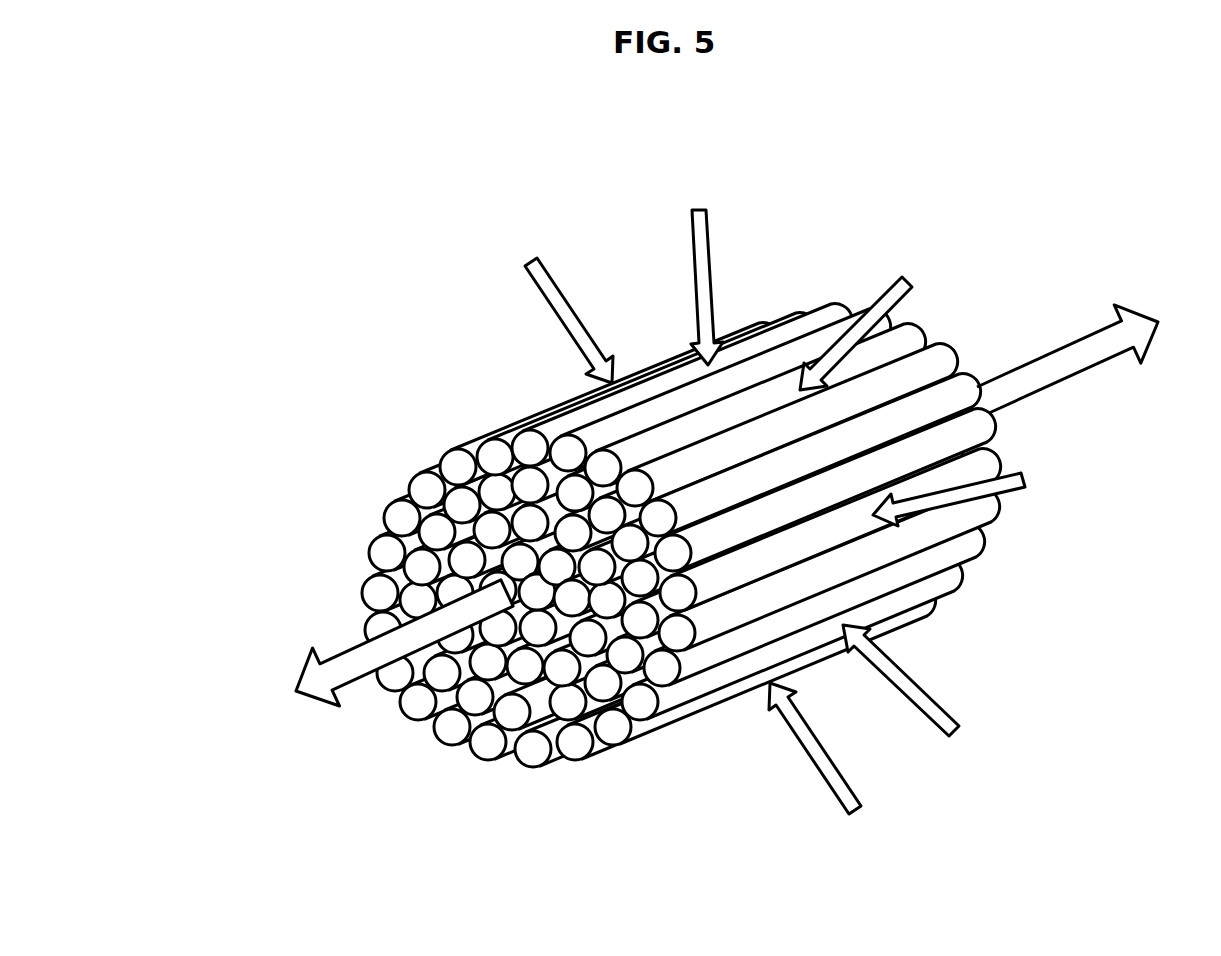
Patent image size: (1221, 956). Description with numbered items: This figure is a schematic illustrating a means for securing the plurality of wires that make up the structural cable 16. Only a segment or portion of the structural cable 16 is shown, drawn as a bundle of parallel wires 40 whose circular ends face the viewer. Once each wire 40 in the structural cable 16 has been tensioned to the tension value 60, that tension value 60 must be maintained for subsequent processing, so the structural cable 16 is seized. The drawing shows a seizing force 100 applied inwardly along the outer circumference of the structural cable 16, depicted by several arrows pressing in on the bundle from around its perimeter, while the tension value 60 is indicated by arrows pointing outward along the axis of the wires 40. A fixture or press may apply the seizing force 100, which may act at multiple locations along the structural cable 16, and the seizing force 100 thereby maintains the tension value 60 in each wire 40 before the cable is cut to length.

The structural cable 16 is at (242, 353).
The wire 40 is at (456, 468).
The tension value 60 is at (335, 708).
The seizing force 100 is at (537, 272).